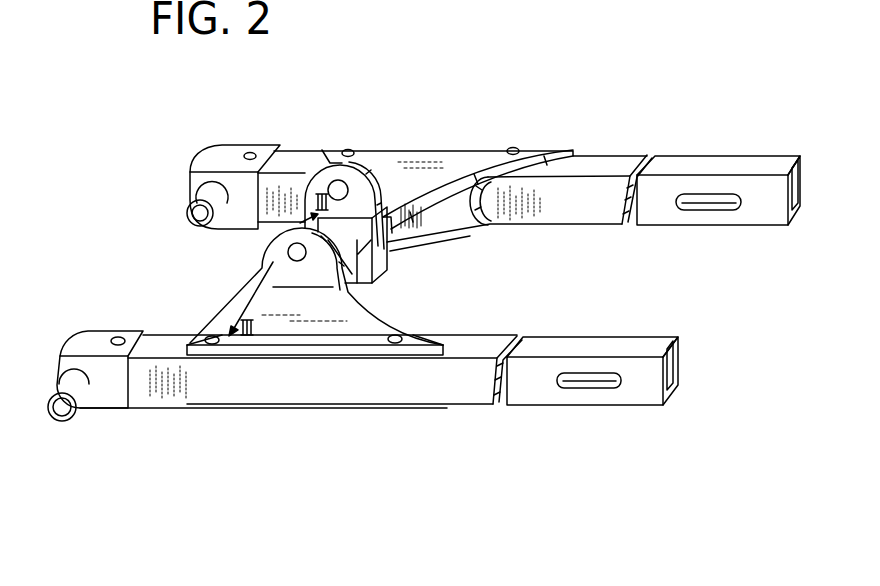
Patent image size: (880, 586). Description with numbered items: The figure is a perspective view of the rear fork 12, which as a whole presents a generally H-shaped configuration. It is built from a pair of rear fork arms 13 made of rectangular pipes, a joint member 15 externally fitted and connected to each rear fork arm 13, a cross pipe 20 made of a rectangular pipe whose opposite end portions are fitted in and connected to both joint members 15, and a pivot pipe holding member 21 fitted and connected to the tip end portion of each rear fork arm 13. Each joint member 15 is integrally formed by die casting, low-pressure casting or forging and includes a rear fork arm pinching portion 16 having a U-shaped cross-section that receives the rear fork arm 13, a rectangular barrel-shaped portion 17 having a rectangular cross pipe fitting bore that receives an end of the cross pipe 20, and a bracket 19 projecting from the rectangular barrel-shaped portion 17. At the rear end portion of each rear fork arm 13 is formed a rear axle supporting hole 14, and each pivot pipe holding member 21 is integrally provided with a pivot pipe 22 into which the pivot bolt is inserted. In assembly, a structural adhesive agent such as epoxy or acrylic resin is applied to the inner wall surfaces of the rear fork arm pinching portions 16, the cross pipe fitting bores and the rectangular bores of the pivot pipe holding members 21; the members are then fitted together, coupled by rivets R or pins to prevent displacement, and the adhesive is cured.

The rear fork 12 is at (618, 122).
The rear fork arm 13 is at (594, 158).
The rear axle supporting hole 14 is at (690, 204).
The joint member 15 is at (454, 133).
The rear fork arm pinching portion 16 is at (426, 150).
The rectangular barrel-shaped portion 17 is at (373, 265).
The bracket 19 is at (368, 166).
The cross pipe 20 is at (352, 290).
The pivot pipe holding member 21 is at (236, 149).
The pivot pipe 22 is at (189, 221).
The rivet R is at (252, 151).